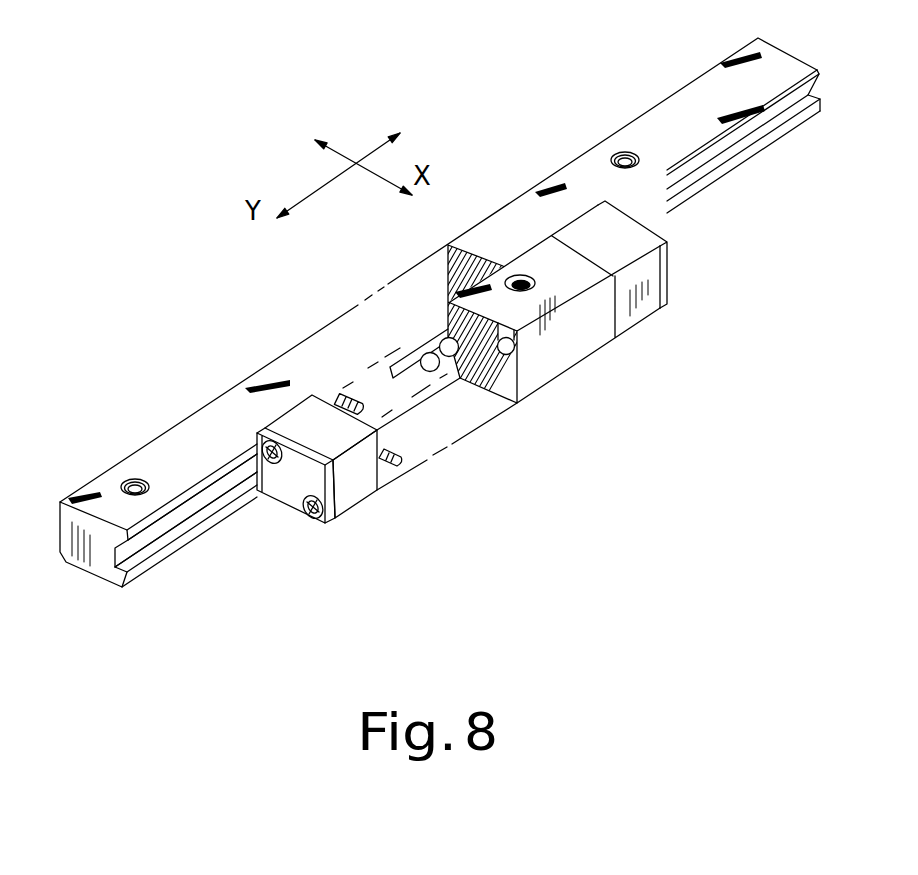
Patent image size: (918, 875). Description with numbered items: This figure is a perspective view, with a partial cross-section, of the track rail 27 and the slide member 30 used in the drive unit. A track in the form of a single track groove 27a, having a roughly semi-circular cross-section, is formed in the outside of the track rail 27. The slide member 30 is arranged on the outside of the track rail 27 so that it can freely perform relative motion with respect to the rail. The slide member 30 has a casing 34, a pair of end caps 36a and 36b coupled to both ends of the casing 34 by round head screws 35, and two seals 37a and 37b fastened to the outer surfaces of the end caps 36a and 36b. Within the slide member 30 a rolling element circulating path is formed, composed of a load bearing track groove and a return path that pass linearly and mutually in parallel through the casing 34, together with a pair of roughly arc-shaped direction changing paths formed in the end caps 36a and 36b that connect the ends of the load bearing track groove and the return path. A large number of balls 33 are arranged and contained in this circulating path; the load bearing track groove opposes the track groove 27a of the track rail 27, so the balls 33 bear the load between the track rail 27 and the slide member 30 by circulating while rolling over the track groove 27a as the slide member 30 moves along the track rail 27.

The track rail 27 is at (440, 343).
The track groove 27a is at (158, 545).
The slide member 30 is at (511, 417).
The balls 33 is at (450, 357).
The casing 34 is at (500, 367).
The round head screws 35 is at (270, 465).
The end cap 36a is at (322, 514).
The end cap 36b is at (684, 300).
The seal 37a is at (327, 525).
The seal 37b is at (672, 277).